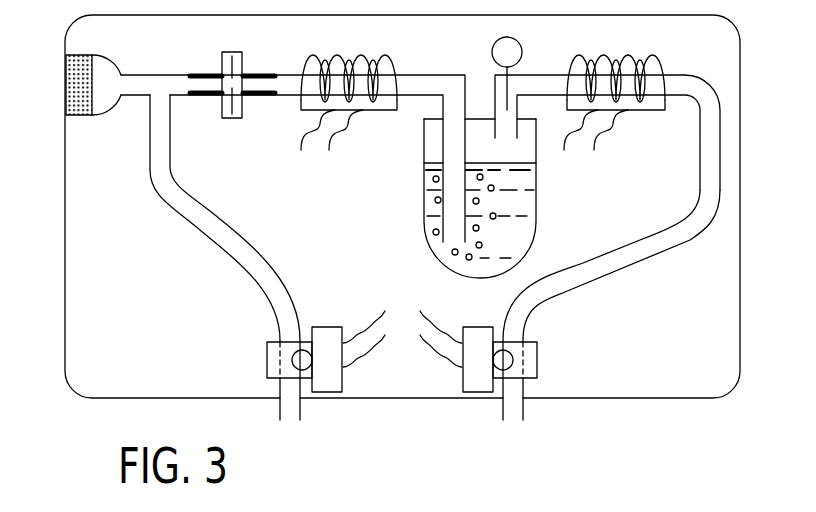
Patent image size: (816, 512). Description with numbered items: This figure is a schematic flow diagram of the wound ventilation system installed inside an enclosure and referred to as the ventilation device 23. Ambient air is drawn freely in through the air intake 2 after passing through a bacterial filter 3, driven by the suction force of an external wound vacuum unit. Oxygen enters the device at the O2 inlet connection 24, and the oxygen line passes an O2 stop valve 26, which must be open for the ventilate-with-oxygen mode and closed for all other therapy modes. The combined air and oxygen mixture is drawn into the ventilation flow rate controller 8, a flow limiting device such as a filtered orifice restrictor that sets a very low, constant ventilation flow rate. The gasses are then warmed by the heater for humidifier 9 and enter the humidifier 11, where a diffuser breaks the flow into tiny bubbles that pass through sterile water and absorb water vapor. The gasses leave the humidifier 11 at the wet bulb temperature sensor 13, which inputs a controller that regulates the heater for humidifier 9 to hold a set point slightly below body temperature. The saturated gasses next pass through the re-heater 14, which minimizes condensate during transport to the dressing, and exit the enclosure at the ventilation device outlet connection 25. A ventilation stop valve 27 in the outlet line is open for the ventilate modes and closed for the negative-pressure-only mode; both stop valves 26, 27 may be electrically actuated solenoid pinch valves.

The air intake 2 is at (67, 82).
The bacterial filter 3 is at (75, 55).
The ventilation flow rate controller 8 is at (221, 105).
The heater for humidifier 9 is at (380, 110).
The humidifier 11 is at (424, 197).
The wet bulb temperature sensor 13 is at (493, 44).
The re-heater 14 is at (646, 110).
The ventilation device 23 is at (742, 205).
The O2 inlet connection 24 is at (303, 403).
The ventilation device outlet connection 25 is at (503, 403).
The O2 stop valve 26 is at (343, 333).
The ventilation stop valve 27 is at (462, 333).